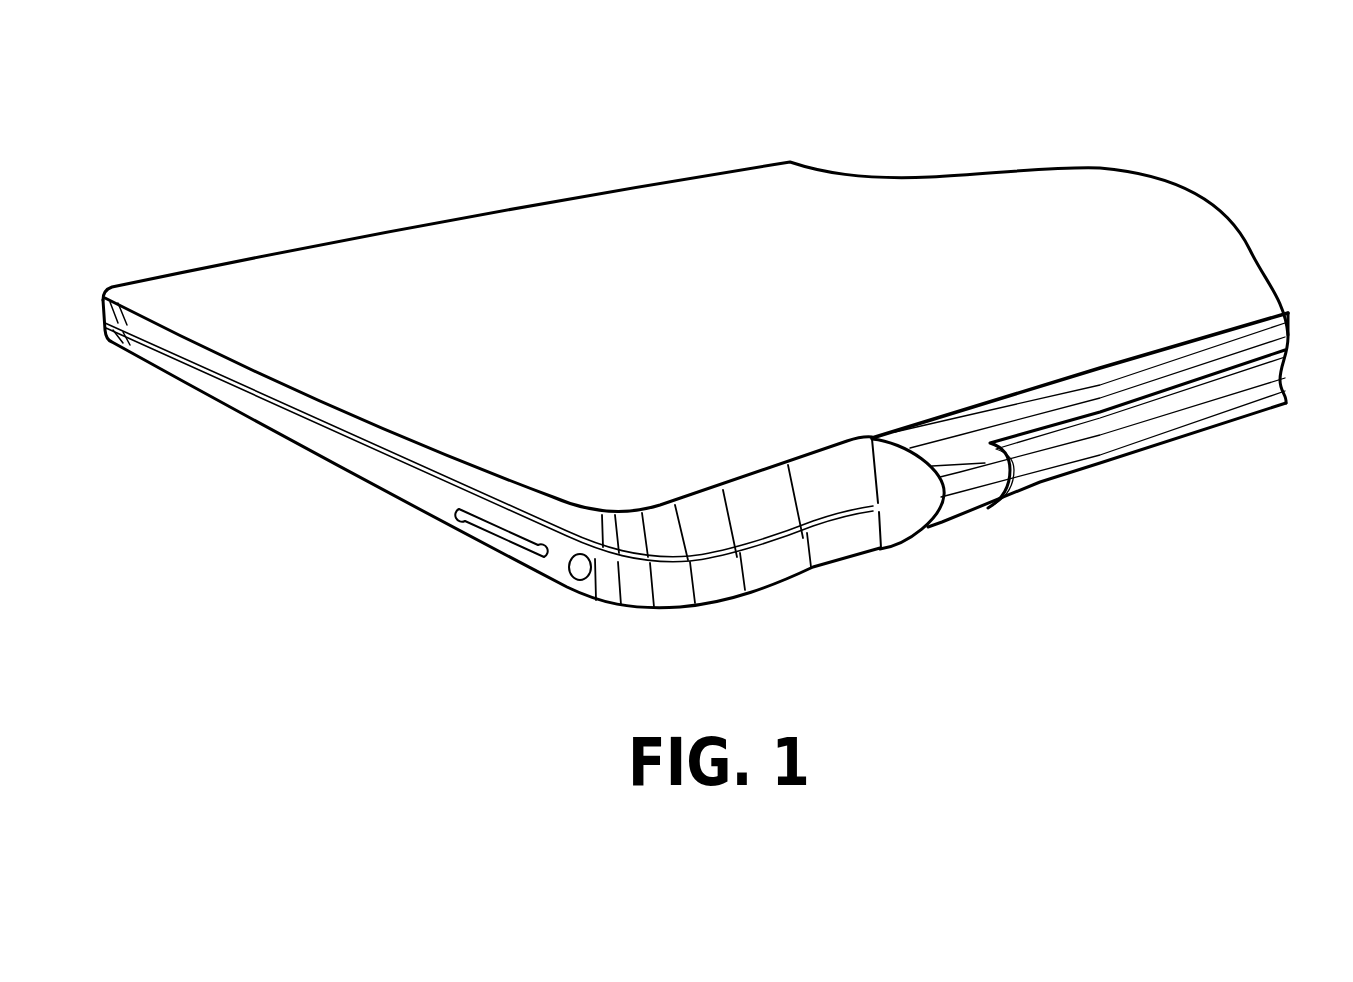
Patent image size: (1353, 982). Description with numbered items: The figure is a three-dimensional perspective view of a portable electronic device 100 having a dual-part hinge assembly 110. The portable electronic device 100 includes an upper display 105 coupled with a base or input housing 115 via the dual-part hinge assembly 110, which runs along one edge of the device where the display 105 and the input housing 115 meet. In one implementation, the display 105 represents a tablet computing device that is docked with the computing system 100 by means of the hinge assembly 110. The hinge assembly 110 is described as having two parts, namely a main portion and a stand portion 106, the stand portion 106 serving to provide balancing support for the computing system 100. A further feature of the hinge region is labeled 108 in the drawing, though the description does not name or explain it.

The portable electronic device 100 is at (383, 146).
The upper display 105 is at (218, 267).
The stand portion 106 is at (952, 508).
The hinge recess 108 is at (1044, 480).
The dual-part hinge assembly 110 is at (1024, 406).
The input housing 115 is at (390, 488).